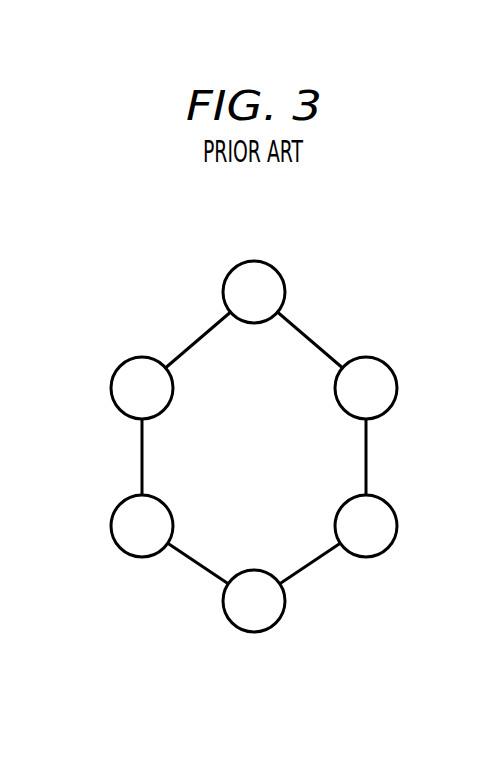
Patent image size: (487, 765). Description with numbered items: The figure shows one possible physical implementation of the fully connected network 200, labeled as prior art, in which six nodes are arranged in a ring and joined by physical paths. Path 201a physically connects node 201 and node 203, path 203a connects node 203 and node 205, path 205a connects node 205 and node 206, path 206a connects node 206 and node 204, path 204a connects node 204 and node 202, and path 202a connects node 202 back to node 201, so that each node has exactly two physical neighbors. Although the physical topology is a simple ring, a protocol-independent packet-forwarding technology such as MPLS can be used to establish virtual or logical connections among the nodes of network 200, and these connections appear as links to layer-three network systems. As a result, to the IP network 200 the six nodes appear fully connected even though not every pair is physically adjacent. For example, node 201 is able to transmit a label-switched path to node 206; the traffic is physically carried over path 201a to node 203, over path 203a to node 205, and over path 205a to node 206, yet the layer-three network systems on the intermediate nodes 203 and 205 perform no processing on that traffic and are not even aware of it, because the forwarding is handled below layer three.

The fully connected network 200 is at (270, 208).
The node 201 is at (282, 272).
The node 202 is at (110, 388).
The node 203 is at (397, 388).
The node 204 is at (110, 526).
The node 205 is at (397, 524).
The node 206 is at (254, 632).
The path 201a is at (310, 335).
The path 202a is at (197, 342).
The path 203a is at (366, 459).
The path 204a is at (142, 457).
The path 205a is at (312, 565).
The path 206a is at (190, 565).